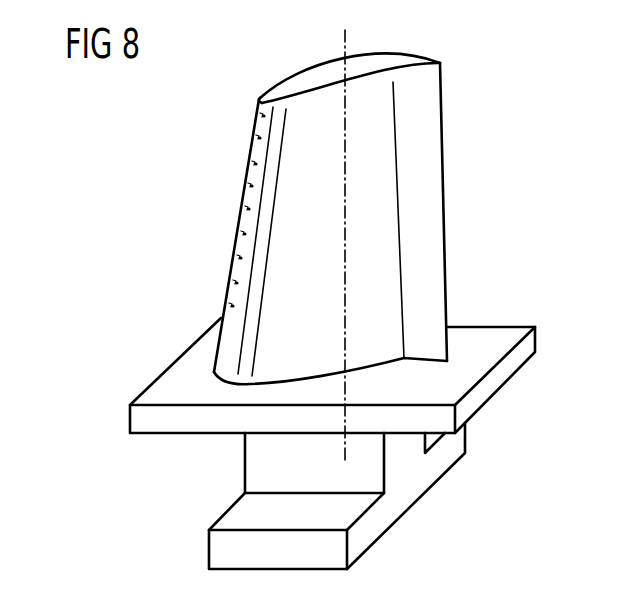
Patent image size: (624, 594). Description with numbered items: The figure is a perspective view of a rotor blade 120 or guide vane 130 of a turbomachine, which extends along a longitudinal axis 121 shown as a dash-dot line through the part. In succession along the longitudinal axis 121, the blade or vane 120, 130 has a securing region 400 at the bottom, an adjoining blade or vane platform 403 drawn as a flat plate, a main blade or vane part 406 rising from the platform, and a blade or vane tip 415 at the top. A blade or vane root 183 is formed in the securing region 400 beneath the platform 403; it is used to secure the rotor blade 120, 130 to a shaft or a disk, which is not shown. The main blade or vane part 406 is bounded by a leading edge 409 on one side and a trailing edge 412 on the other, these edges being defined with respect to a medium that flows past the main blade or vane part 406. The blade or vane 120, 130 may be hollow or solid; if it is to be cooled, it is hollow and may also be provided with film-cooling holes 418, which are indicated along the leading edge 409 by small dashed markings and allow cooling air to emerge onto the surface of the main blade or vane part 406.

The rotor blade 120 is at (288, 239).
The guide vane 130 is at (142, 231).
The longitudinal axis 121 is at (343, 50).
The blade or vane tip 415 is at (268, 92).
The leading edge 409 is at (232, 163).
The trailing edge 412 is at (484, 179).
The main blade or vane part 406 is at (225, 347).
The film-cooling holes 418 is at (256, 115).
The blade or vane platform 403 is at (502, 372).
The securing region 400 is at (402, 507).
The blade or vane root 183 is at (230, 510).